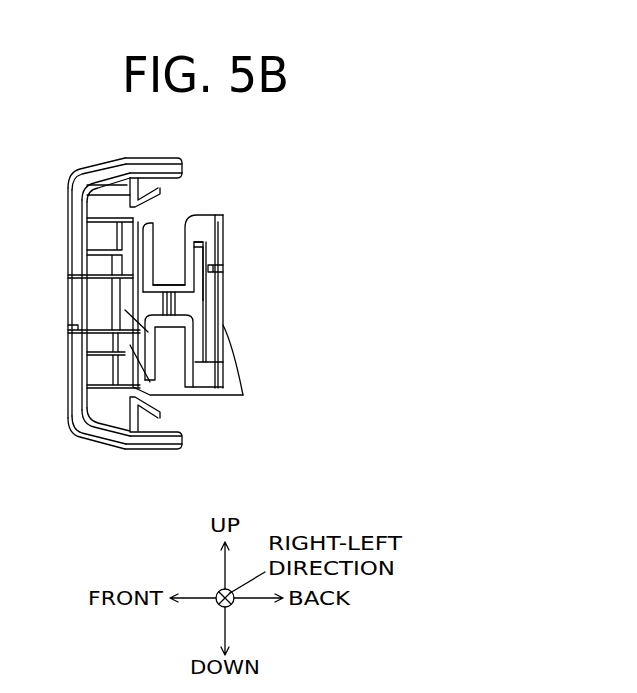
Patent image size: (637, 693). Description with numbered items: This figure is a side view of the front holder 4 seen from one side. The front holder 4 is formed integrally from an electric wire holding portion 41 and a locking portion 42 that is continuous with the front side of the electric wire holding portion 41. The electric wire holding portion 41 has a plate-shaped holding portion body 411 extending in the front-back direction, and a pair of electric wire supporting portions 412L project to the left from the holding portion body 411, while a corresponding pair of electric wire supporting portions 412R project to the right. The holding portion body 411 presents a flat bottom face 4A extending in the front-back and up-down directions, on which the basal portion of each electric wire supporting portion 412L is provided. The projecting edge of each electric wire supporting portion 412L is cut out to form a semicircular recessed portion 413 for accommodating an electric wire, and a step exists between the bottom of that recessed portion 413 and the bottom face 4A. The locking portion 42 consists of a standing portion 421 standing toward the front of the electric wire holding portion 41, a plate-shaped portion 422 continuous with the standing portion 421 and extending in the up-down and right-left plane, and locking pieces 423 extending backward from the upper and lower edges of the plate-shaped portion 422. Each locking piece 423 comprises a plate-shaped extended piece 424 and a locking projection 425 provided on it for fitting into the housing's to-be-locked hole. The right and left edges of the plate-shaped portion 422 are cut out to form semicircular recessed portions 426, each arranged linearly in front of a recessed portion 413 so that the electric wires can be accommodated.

The front holder 4 is at (400, 285).
The electric wire holding portion 41 is at (358, 262).
The locking portion 42 is at (358, 357).
The bottom face 4A is at (165, 290).
The holding portion body 411 is at (190, 272).
The electric wire supporting portion 412R is at (288, 343).
The electric wire supporting portion 412L is at (222, 338).
The recessed portion 413 is at (193, 331).
The standing portion 421 is at (82, 308).
The plate-shaped portion 422 is at (82, 240).
The locking piece 423 is at (252, 152).
The extended piece 424 is at (182, 160).
The locking projection 425 is at (150, 186).
The recessed portion 426 is at (70, 328).